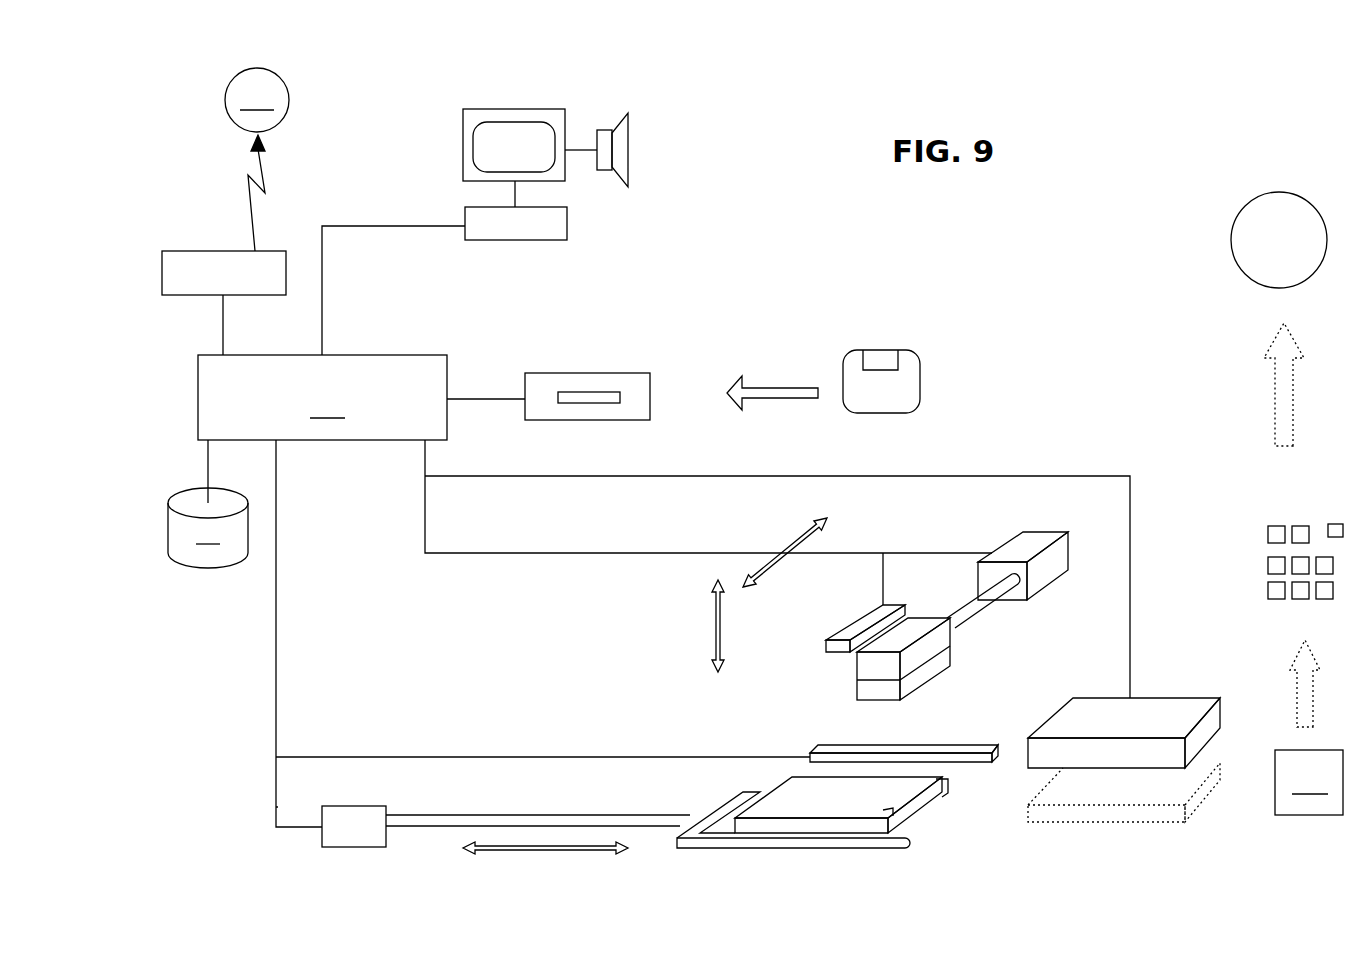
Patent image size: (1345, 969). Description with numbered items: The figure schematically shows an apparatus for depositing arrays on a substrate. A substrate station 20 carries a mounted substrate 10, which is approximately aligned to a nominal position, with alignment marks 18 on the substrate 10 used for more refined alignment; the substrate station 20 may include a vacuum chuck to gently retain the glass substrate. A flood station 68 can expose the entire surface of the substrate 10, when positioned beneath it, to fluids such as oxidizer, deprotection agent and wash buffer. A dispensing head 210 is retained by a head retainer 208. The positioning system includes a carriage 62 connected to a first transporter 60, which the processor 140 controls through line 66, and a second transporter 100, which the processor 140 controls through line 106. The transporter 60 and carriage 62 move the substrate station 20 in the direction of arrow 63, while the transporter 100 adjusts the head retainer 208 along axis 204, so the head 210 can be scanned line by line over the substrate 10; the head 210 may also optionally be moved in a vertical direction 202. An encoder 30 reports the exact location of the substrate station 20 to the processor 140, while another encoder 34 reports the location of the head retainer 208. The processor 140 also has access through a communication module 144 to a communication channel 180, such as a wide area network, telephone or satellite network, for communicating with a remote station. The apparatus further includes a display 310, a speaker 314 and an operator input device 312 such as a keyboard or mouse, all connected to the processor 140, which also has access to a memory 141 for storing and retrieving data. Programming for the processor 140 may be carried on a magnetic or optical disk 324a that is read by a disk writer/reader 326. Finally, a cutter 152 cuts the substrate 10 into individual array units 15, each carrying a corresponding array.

The communication channel 180 is at (257, 159).
The communication module 144 is at (175, 251).
The display 310 is at (463, 141).
The operator input device 312 is at (465, 207).
The speaker 314 is at (628, 155).
The processor 140 is at (504, 591).
The memory 141 is at (188, 565).
The disk writer/reader 326 is at (640, 420).
The magnetic or optical disk 324a is at (900, 413).
The line 106 is at (512, 552).
The axis 204 is at (790, 546).
The vertical direction 202 is at (716, 648).
The encoder 34 is at (833, 637).
The head retainer 208 is at (930, 642).
The dispensing head 210 is at (857, 690).
The second transporter 100 is at (1023, 532).
The encoder 30 is at (815, 745).
The first transporter 60 is at (362, 806).
The carriage 62 is at (428, 828).
The arrow 63 is at (573, 852).
The line 66 is at (276, 807).
The substrate station 20 is at (890, 848).
The substrate 10 is at (783, 795).
The alignment marks 18 is at (893, 812).
The flood station 68 is at (1042, 758).
The cutter 152 is at (1309, 727).
The array units 15 is at (1336, 524).